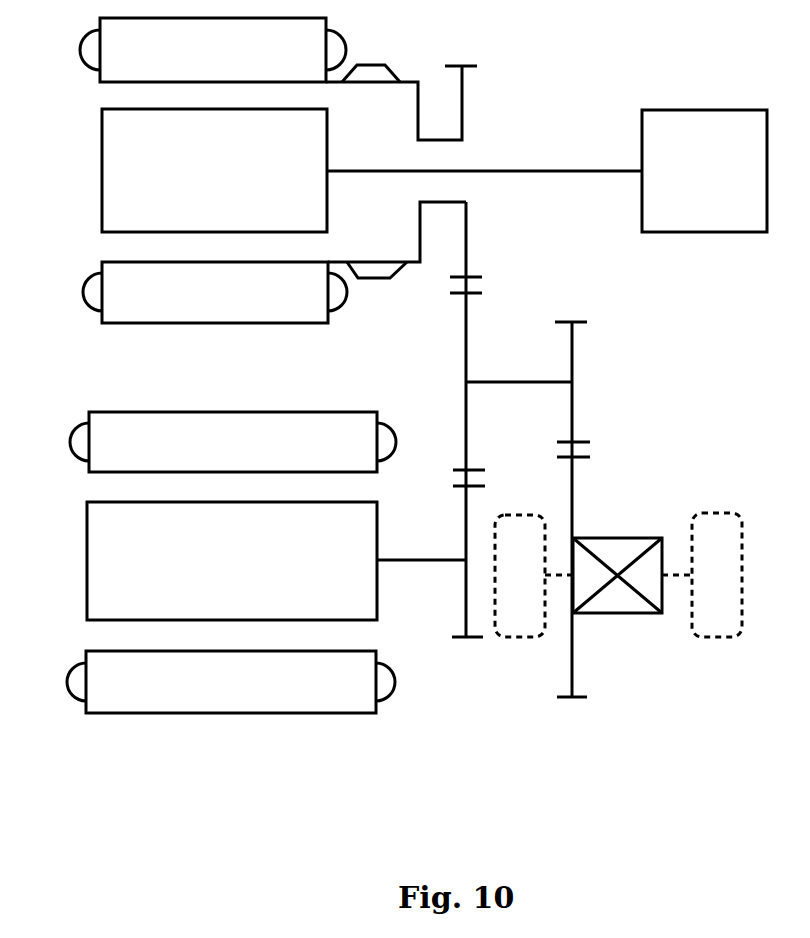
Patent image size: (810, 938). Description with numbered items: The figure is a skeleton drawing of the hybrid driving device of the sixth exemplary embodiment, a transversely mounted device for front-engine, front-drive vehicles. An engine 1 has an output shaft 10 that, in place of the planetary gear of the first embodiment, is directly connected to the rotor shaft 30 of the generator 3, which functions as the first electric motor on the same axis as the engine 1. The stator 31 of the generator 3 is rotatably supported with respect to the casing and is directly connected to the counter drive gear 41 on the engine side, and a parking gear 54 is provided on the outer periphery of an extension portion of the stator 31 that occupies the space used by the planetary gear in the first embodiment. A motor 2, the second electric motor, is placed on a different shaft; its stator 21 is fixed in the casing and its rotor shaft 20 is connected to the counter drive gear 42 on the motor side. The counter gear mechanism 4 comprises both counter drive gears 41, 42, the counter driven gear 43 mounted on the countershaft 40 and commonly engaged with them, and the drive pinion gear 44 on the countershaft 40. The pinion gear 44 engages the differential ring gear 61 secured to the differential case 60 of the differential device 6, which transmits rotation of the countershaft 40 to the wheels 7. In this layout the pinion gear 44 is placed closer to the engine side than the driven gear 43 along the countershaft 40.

The engine 1 is at (690, 110).
The motor 2 is at (72, 562).
The generator 3 is at (88, 183).
The counter gear mechanism 4 is at (602, 337).
The differential device 6 is at (635, 562).
The driving wheel 7 is at (742, 578).
The output shaft 10 is at (565, 169).
The rotor shaft 20 is at (430, 562).
The stator 21 is at (247, 412).
The rotor shaft 30 is at (368, 173).
The stator 31 is at (185, 323).
The countershaft 40 is at (527, 385).
The counter drive gear 41 is at (468, 263).
The counter drive gear 42 is at (467, 500).
The counter driven gear 43 is at (463, 303).
The drive pinion gear 44 is at (573, 423).
The parking gear 54 is at (392, 65).
The differential case 60 is at (610, 613).
The differential ring gear 61 is at (575, 488).